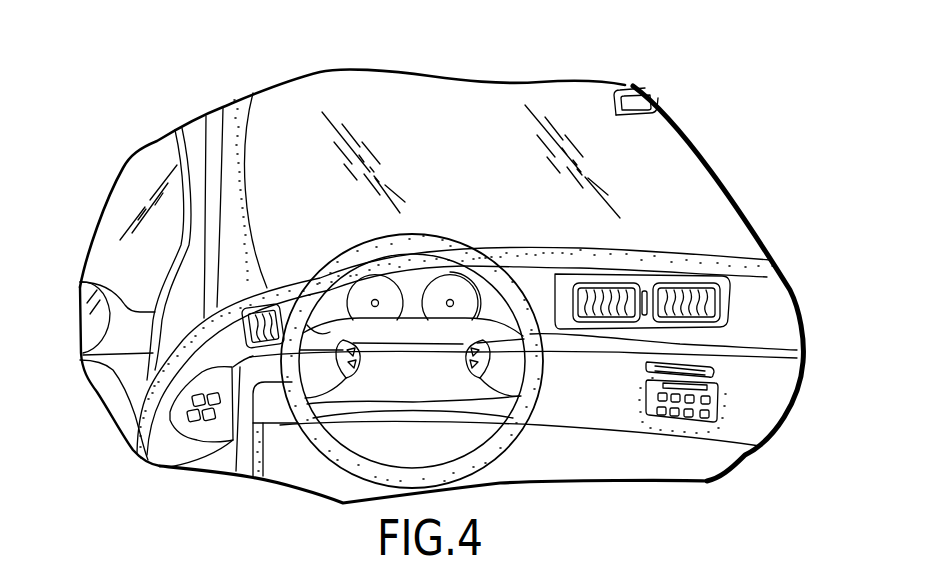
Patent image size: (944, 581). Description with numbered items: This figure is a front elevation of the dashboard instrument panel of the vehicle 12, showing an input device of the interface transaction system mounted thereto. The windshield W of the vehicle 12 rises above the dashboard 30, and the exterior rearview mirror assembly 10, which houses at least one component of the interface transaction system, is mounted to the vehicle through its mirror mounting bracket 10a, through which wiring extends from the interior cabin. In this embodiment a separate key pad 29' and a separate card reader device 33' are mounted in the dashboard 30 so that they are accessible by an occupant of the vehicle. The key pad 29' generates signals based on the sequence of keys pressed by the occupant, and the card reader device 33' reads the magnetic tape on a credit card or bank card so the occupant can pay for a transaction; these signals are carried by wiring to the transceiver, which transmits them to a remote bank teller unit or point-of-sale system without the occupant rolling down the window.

The exterior rearview mirror assembly 10 is at (103, 268).
The mirror mounting bracket 10a is at (125, 338).
The vehicle 12 is at (503, 83).
The windshield W is at (423, 110).
The dashboard 30 is at (676, 244).
The card reader device 33' is at (761, 342).
The key pad 29' is at (754, 405).